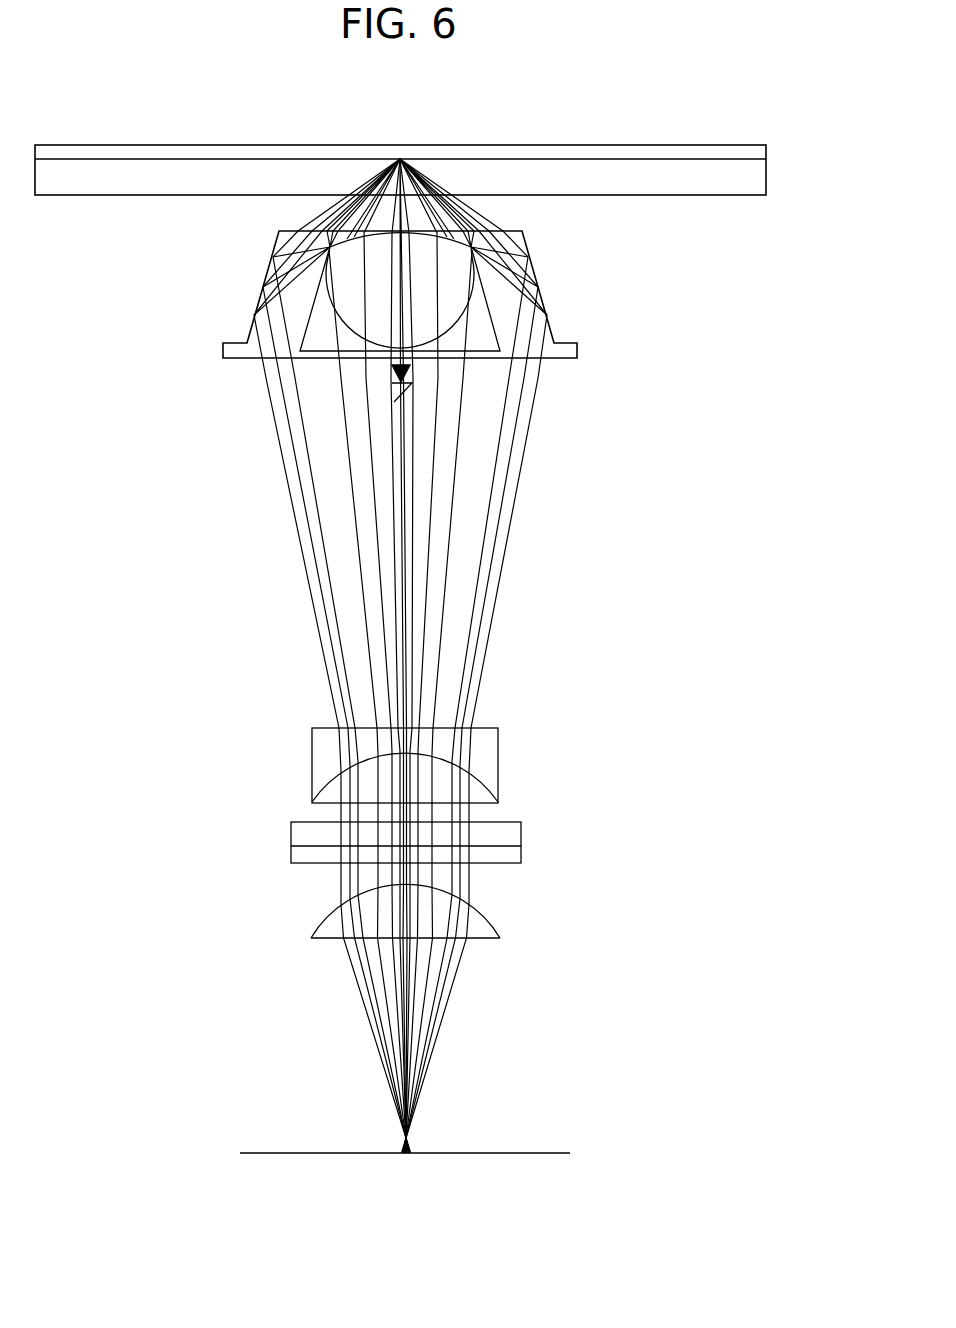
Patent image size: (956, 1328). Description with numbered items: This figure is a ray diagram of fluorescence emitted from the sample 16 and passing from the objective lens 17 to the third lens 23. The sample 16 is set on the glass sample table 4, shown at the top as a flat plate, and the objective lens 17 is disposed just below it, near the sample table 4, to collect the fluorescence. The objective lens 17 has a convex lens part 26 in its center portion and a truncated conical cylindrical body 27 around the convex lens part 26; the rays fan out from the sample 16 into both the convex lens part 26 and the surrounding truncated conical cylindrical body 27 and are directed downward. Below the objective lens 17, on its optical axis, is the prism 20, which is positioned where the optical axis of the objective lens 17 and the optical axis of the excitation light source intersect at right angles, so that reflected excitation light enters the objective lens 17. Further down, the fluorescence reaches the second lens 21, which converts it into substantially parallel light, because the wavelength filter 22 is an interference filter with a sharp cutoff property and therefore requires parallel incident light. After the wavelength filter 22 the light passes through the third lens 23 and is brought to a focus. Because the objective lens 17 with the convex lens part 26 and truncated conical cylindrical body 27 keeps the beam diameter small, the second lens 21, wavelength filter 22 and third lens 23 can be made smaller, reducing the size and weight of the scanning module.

The sample table 4 is at (767, 180).
The sample 16 is at (585, 143).
The objective lens 17 is at (392, 291).
The prism 20 is at (394, 402).
The second lens 21 is at (498, 752).
The wavelength filter 22 is at (521, 832).
The third lens 23 is at (502, 935).
The convex lens part 26 is at (455, 290).
The truncated conical cylindrical body 27 is at (528, 238).